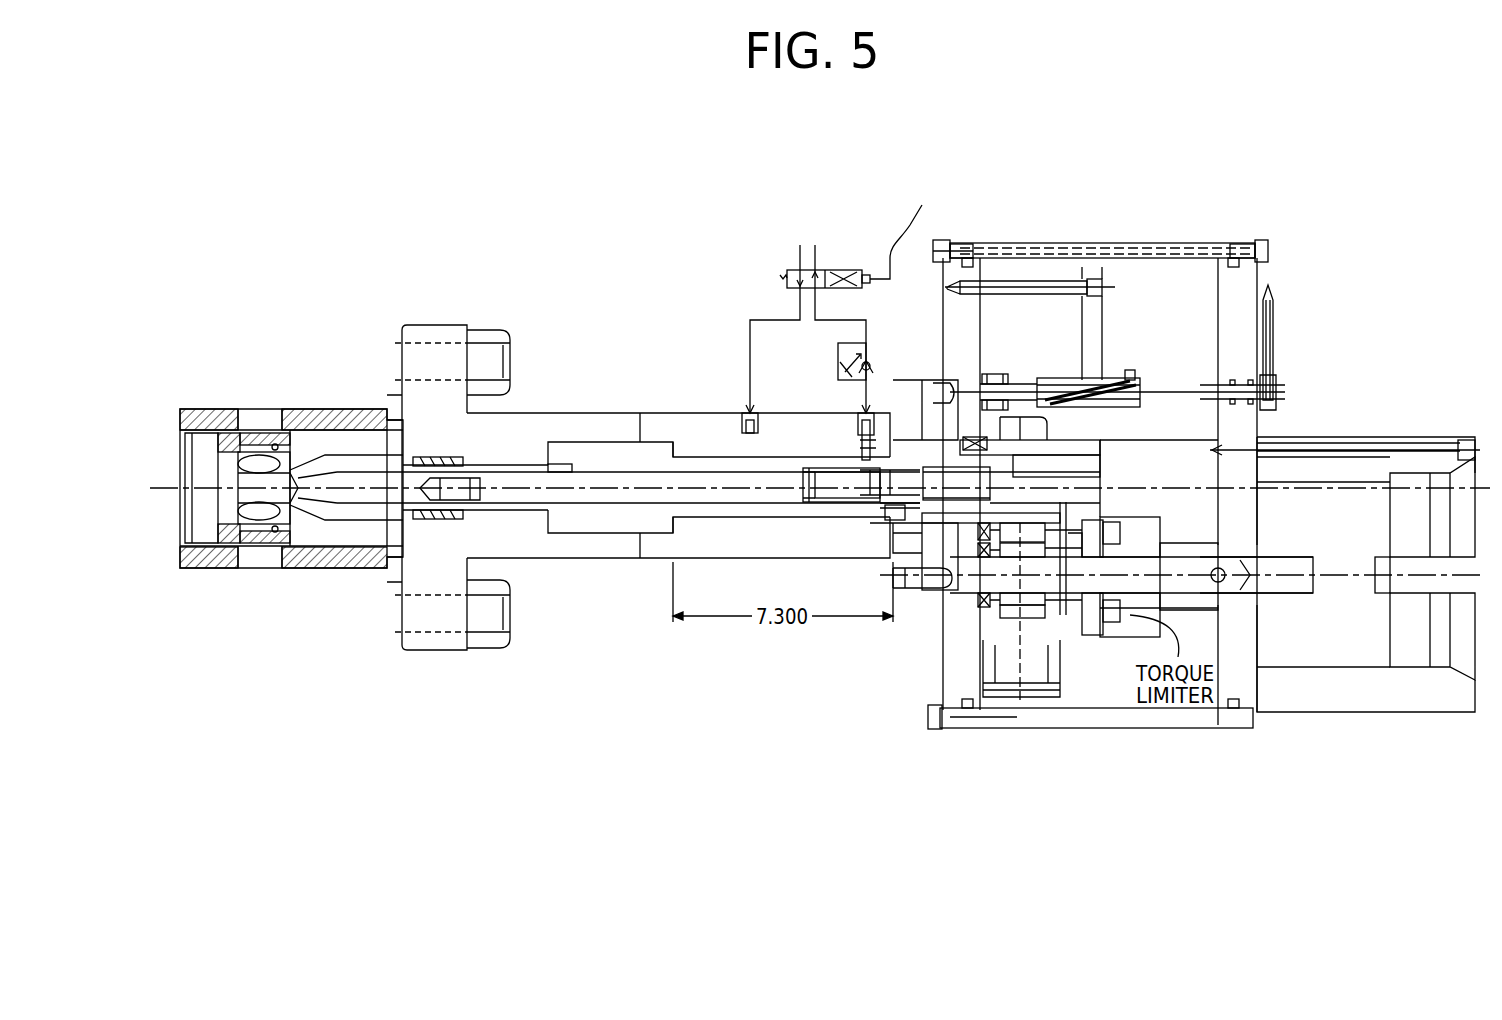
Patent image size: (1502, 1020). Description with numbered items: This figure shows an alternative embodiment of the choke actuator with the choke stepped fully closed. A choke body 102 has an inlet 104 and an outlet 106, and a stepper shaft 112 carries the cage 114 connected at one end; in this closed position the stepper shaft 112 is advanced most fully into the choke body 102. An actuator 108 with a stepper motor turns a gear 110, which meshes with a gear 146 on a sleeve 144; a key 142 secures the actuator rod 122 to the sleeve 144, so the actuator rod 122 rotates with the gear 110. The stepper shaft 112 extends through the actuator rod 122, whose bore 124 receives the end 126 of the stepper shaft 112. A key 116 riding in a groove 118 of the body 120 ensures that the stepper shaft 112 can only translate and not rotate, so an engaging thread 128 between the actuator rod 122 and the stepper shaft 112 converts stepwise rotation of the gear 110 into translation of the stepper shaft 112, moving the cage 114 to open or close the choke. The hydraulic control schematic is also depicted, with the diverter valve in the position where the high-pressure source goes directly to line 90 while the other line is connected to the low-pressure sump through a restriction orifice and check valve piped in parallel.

The line 90 is at (750, 350).
The choke body 102 is at (326, 409).
The inlet 104 is at (258, 570).
The outlet 106 is at (190, 488).
The actuator 108 is at (1098, 243).
The gear 110 is at (950, 557).
The stepper shaft 112 is at (585, 480).
The cage 114 is at (253, 412).
The key 116 is at (553, 464).
The groove 118 is at (633, 466).
The body 120 is at (549, 558).
The actuator rod 122 is at (810, 510).
The bore 124 is at (955, 485).
The end 126 is at (1110, 480).
The engaging thread 128 is at (898, 515).
The key 142 is at (1110, 452).
The sleeve 144 is at (1078, 503).
The gear 146 is at (1013, 547).